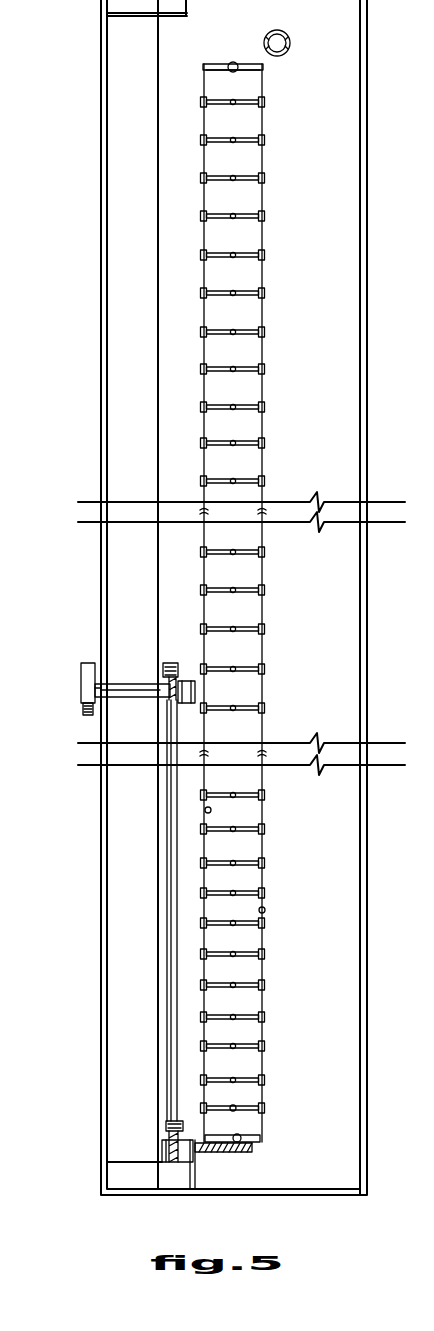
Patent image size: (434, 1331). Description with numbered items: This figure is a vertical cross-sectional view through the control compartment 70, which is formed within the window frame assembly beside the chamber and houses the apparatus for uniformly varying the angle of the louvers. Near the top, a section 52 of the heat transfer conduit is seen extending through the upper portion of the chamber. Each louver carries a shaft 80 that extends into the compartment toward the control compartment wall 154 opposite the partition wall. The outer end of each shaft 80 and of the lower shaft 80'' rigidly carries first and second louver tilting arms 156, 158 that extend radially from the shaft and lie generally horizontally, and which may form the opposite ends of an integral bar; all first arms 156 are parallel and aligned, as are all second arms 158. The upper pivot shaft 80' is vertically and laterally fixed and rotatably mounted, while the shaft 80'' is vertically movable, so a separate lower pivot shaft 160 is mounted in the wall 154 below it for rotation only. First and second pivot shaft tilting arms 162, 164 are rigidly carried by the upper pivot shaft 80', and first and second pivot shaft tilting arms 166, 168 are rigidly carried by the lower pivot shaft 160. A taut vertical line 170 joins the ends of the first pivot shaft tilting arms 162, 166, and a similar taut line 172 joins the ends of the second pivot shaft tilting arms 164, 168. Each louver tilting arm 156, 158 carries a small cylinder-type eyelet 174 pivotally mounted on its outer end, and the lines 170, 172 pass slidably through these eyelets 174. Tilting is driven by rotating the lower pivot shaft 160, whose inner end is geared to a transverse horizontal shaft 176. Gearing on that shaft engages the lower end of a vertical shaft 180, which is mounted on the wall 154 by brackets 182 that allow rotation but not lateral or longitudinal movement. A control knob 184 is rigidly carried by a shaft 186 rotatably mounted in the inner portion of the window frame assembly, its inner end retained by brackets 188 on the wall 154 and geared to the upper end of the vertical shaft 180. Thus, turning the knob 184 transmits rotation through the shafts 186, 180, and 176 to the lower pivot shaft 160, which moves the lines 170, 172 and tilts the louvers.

The conduit section 52 is at (289, 33).
The control compartment 70 is at (112, 925).
The shaft 80 is at (269, 590).
The upper pivot shaft 80' is at (237, 45).
The lower louver shaft 80'' is at (274, 1090).
The control compartment wall 154 is at (337, 627).
The first louver tilting arm 156 is at (249, 105).
The second louver tilting arm 158 is at (210, 100).
The lower pivot shaft 160 is at (246, 1153).
The first pivot shaft tilting arm 162 is at (259, 69).
The second pivot shaft tilting arm 164 is at (206, 63).
The first pivot shaft tilting arm 166 is at (262, 1140).
The second pivot shaft tilting arm 168 is at (233, 1138).
The vertical line 170 is at (266, 910).
The line 172 is at (204, 810).
The eyelet 174 is at (201, 178).
The transverse horizontal shaft 176 is at (203, 1155).
The vertical shaft 180 is at (168, 990).
The bracket 182 is at (164, 668).
The control knob 184 is at (80, 682).
The shaft 186 is at (128, 698).
The bracket 188 is at (186, 680).